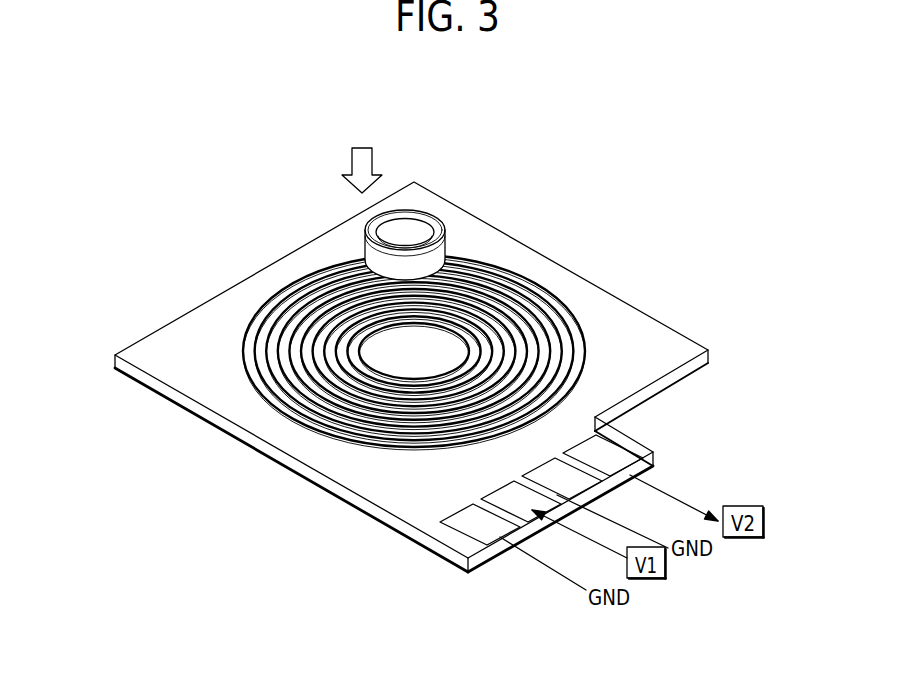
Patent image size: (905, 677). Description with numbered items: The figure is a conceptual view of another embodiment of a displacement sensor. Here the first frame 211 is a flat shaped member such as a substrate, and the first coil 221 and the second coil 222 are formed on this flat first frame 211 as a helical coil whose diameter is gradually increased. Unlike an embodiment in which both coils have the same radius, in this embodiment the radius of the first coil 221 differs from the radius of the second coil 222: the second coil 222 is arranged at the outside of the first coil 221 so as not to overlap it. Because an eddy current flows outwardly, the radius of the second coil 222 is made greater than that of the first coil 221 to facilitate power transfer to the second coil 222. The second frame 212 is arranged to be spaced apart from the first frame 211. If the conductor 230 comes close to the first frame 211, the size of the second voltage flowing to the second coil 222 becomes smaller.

The first frame 211 is at (673, 370).
The second frame 212 is at (393, 319).
The first coil 221 is at (323, 352).
The second coil 222 is at (533, 283).
The conductor 230 is at (425, 212).